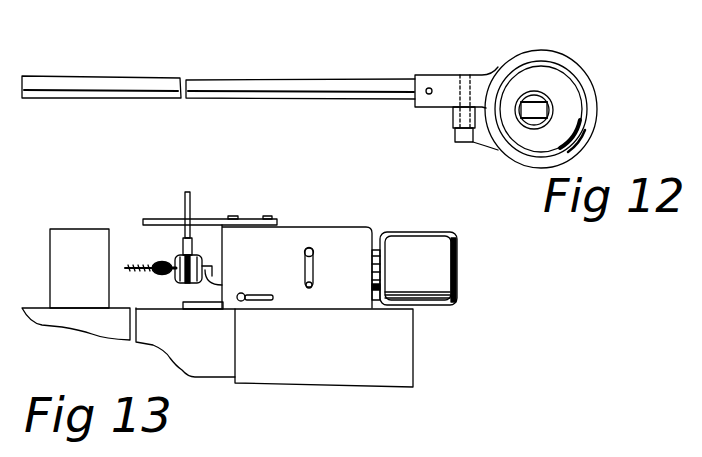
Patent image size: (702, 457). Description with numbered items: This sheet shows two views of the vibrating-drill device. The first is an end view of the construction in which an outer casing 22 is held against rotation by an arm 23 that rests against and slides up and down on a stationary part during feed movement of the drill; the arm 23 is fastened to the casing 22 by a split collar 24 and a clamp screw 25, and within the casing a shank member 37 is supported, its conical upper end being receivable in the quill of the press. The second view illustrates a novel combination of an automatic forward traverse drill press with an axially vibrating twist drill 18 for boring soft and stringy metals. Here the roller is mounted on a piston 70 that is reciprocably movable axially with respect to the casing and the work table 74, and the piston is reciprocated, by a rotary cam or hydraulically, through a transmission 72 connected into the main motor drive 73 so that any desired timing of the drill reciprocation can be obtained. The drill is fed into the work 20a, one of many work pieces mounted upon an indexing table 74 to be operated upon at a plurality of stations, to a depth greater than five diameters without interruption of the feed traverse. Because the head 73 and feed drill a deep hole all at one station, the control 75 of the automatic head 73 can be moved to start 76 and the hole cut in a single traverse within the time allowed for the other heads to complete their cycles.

In FIG. 13, the drill bit 18 is at (125, 266).
In FIG. 13, the work 20a is at (55, 229).
In FIG. 12, the outer casing 22 is at (545, 78).
In FIG. 13, the outer casing 22 is at (178, 281).
In FIG. 12, the arm 23 is at (220, 82).
In FIG. 13, the arm 23 is at (192, 196).
In FIG. 12, the split collar 24 is at (527, 52).
In FIG. 12, the clamp screw 25 is at (455, 143).
In FIG. 12, the shank member 37 is at (549, 108).
In FIG. 13, the piston 70 is at (208, 266).
In FIG. 13, the transmission 72 is at (220, 284).
In FIG. 13, the main motor drive / automatic head 73 is at (316, 337).
In FIG. 13, the indexing table 74 is at (102, 323).
In FIG. 13, the control 75 is at (361, 277).
In FIG. 13, the start position 76 is at (293, 228).